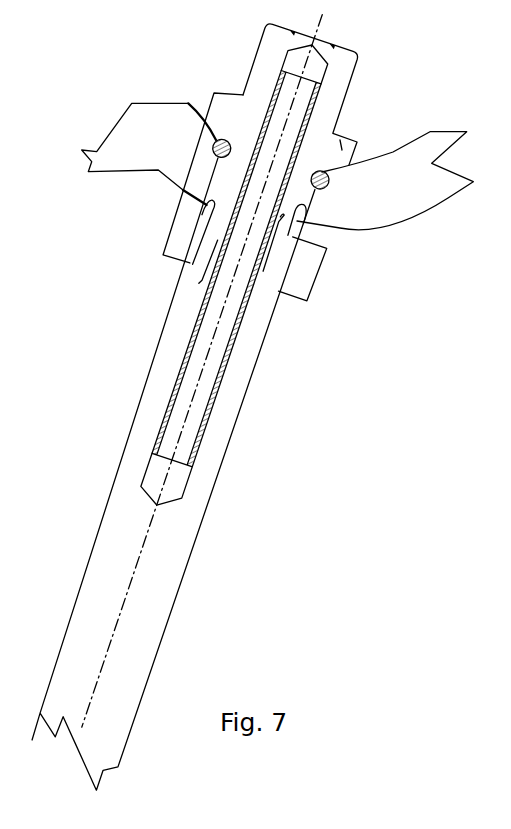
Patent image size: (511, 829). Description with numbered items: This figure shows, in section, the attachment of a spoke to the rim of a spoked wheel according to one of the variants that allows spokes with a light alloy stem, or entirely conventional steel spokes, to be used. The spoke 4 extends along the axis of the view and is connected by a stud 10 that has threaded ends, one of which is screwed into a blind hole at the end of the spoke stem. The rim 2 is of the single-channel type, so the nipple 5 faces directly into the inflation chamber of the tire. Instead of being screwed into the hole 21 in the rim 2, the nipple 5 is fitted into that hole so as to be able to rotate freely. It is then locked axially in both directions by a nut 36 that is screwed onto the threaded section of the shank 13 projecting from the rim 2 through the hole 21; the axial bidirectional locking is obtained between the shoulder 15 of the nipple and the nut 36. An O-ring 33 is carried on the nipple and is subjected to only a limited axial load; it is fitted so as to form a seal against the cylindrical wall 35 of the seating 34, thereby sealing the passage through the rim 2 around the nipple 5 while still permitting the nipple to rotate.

The rim 2 is at (150, 153).
The spoke 4 is at (210, 512).
The nipple 5 is at (367, 63).
The stud 10 is at (210, 365).
The shank 13 is at (193, 243).
The shoulder 15 is at (342, 134).
The hole 21 is at (306, 211).
The O-ring 33 is at (216, 141).
The seating 34 is at (396, 151).
The cylindrical wall 35 is at (330, 189).
The nut 36 is at (301, 279).